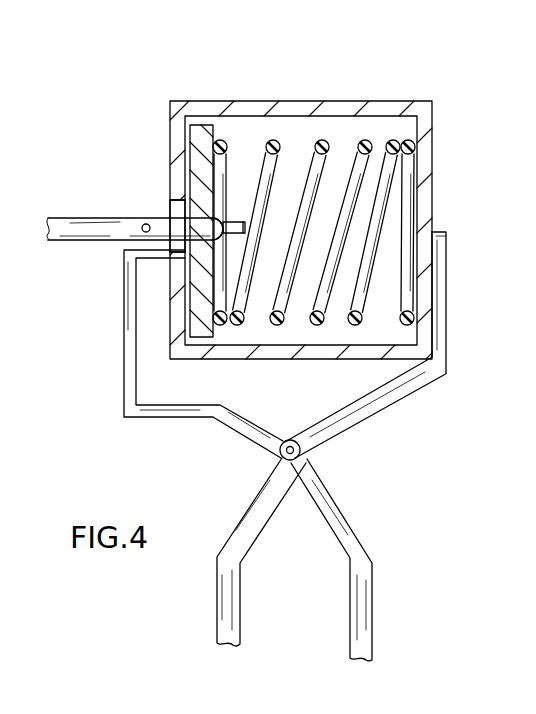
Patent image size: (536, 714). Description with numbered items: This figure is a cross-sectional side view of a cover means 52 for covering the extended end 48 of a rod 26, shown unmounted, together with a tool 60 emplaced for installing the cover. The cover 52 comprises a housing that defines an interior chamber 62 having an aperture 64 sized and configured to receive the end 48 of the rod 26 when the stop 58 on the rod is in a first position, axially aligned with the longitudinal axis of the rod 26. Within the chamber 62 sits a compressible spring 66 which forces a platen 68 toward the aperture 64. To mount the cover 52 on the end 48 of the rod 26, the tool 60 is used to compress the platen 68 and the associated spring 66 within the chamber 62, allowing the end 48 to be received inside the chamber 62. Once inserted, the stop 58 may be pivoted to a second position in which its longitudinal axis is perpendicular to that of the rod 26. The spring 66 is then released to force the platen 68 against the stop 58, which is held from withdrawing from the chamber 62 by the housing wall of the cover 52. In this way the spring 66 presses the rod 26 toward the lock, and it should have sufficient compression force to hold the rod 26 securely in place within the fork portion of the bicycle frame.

The rod 26 is at (78, 236).
The extended end of rod 48 is at (208, 228).
The cover means 52 is at (395, 101).
The stop 58 is at (238, 226).
The tool 60 is at (291, 440).
The interior chamber 62 is at (360, 213).
The aperture 64 is at (175, 212).
The compressible spring 66 is at (320, 146).
The platen 68 is at (199, 142).